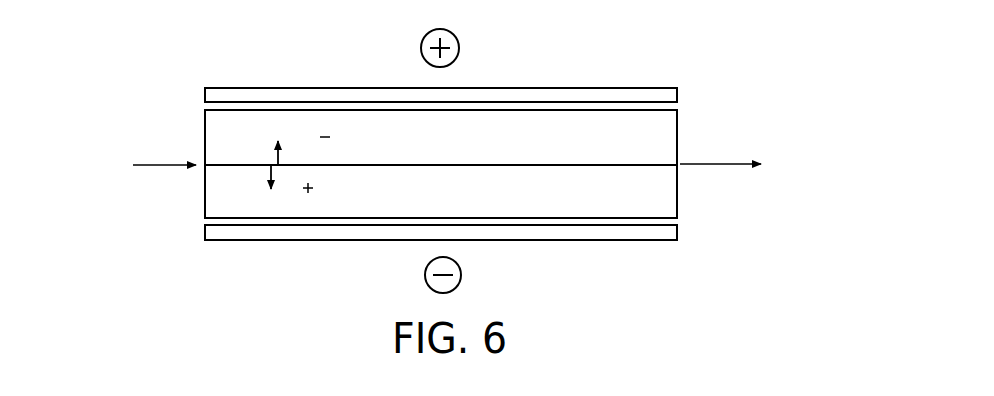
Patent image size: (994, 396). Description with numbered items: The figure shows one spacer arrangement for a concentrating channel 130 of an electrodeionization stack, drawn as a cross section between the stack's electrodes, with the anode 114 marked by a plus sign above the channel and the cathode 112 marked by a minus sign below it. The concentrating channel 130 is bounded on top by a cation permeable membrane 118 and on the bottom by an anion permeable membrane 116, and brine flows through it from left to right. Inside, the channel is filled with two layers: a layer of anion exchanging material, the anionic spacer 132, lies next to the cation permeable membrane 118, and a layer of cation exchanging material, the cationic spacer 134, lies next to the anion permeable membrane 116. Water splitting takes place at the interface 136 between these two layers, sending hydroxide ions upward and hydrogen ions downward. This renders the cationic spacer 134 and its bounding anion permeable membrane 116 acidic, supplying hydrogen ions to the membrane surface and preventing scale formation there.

The concentrating channel 130 is at (276, 66).
The cathode 112 is at (461, 275).
The anode 114 is at (459, 45).
The anion permeable membrane 116 is at (573, 242).
The cation permeable membrane 118 is at (562, 86).
The anionic spacer 132 is at (662, 125).
The cationic spacer 134 is at (662, 199).
The interface 136 is at (347, 164).